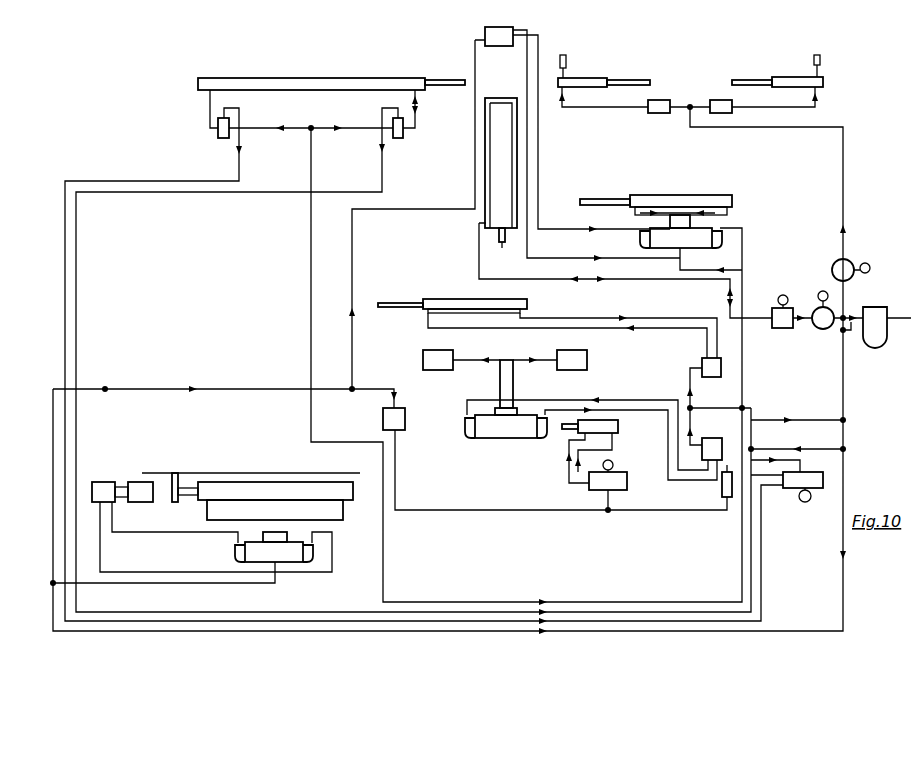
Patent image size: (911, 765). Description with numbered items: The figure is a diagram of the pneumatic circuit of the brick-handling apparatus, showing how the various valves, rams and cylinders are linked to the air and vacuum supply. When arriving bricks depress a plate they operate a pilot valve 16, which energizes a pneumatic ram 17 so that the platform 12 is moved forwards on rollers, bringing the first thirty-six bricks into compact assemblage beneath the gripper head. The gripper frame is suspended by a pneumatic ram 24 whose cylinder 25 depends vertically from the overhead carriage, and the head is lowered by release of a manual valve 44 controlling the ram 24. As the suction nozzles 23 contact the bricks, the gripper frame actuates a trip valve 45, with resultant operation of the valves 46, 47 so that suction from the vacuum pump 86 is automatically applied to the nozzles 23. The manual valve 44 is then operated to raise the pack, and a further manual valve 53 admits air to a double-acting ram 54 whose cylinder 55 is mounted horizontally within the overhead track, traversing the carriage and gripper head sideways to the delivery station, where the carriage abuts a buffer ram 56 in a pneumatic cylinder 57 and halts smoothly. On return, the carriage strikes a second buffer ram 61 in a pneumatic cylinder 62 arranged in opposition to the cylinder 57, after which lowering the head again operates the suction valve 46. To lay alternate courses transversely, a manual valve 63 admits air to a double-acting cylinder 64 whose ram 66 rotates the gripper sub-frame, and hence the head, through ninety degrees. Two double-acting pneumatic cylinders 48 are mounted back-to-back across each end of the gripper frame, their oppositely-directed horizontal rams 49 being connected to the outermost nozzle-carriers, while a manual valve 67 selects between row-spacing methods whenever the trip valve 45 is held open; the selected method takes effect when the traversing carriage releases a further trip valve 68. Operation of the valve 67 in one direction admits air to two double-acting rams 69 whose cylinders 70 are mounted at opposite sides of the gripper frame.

The cylinder 55 is at (325, 88).
The double-acting ram 54 is at (457, 86).
The trip valve 68 is at (503, 46).
The cylinder 25 is at (501, 163).
The pneumatic ram 24 is at (502, 246).
The pneumatic cylinder 62 is at (599, 75).
The second buffer ram 61 is at (637, 80).
The pneumatic cylinder 57 is at (783, 73).
The buffer ram 56 is at (750, 68).
The horizontal ram 49 is at (608, 197).
The double-acting pneumatic cylinder 48 is at (681, 208).
The manual valve 44 is at (805, 291).
The ram 66 is at (398, 302).
The double-acting cylinder 64 is at (455, 294).
The vacuum pump 86 is at (455, 353).
The suction nozzle 23 is at (588, 358).
The manual valve 63 is at (702, 363).
The trip valve 45 is at (383, 420).
The valve 47 is at (508, 438).
The double-acting ram 69 is at (563, 431).
The cylinder 70 is at (618, 425).
The manual valve 67 is at (620, 479).
The suction valve 46 is at (713, 434).
The manual valve 53 is at (820, 489).
The pilot valve 16 is at (131, 482).
The platform 12 is at (227, 472).
The pneumatic ram 17 is at (187, 497).